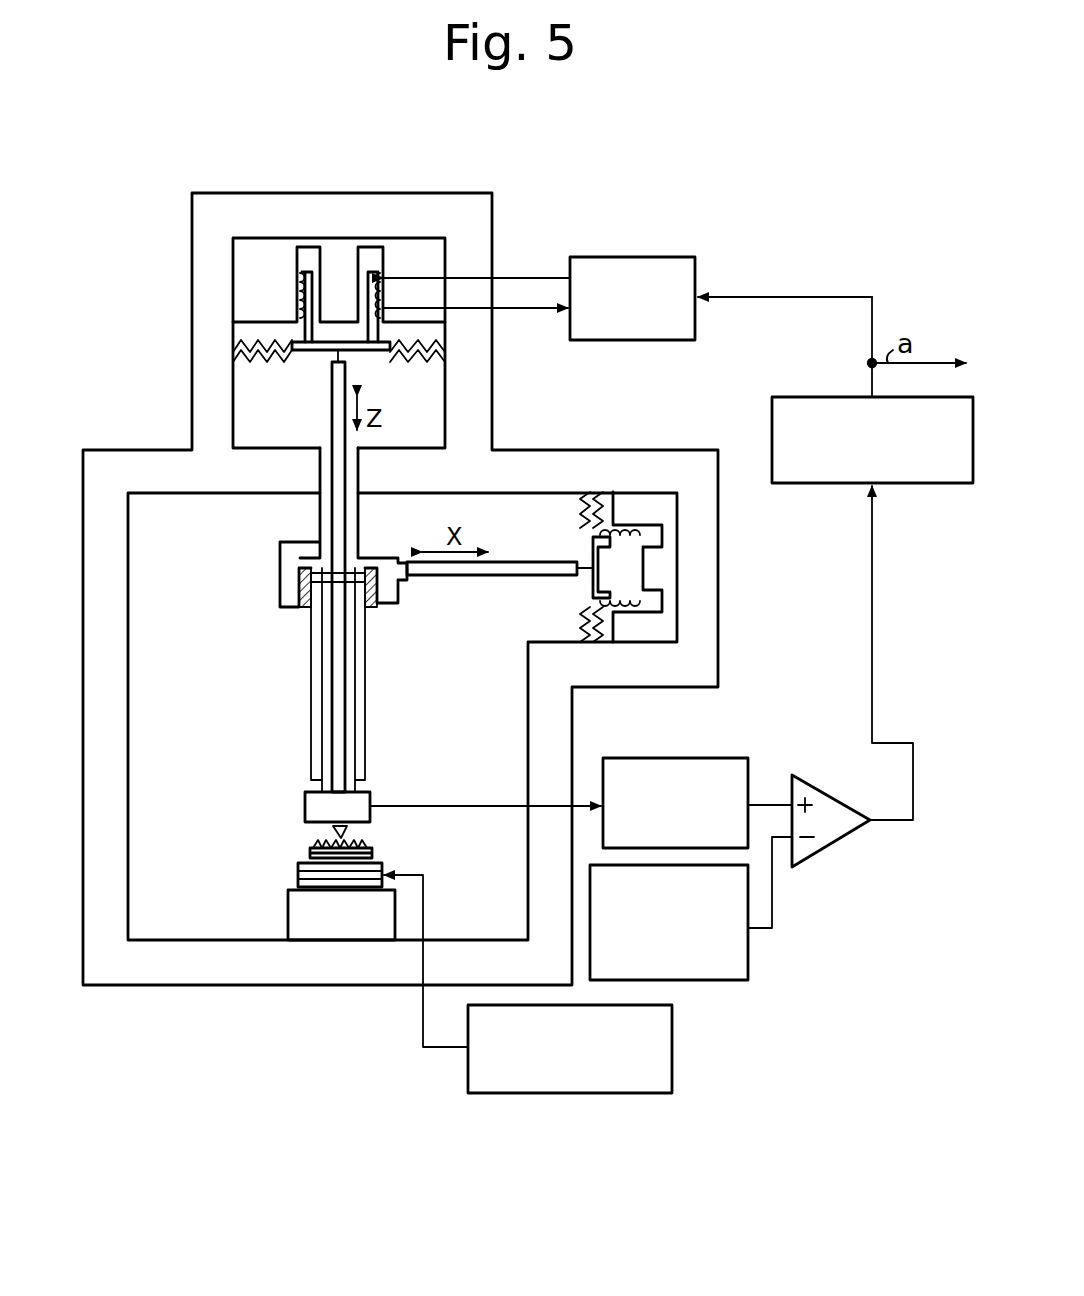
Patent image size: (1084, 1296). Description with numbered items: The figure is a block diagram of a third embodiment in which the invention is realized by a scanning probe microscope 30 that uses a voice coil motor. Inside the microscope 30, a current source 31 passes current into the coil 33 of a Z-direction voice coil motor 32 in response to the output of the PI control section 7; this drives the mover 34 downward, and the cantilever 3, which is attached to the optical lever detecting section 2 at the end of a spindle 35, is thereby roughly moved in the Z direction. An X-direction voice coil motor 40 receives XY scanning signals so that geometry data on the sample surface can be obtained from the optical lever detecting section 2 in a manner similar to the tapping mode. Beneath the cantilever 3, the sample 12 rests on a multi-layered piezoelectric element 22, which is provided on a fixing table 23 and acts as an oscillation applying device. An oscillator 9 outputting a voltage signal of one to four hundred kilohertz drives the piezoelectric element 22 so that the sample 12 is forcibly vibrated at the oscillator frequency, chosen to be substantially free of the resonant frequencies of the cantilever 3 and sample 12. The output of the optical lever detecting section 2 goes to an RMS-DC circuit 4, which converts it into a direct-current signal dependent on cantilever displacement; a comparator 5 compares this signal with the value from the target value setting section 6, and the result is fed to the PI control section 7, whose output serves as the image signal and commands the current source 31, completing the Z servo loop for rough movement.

The scanning probe microscope 30 is at (410, 188).
The voice coil motor 32 is at (338, 278).
The coil 33 is at (297, 289).
The mover 34 is at (303, 352).
The spindle 35 is at (332, 425).
The X-direction voice coil motor 40 is at (645, 570).
The optical lever detecting section 2 is at (360, 806).
The cantilever 3 is at (330, 827).
The sample 12 is at (365, 843).
The multi-layered piezoelectric element 22 is at (296, 867).
The fixing table 23 is at (286, 917).
The current source 31 is at (622, 257).
The PI control section 7 is at (910, 485).
The RMS-DC circuit 4 is at (658, 758).
The comparator 5 is at (823, 842).
The target value setting section 6 is at (712, 980).
The oscillator 9 is at (598, 1093).